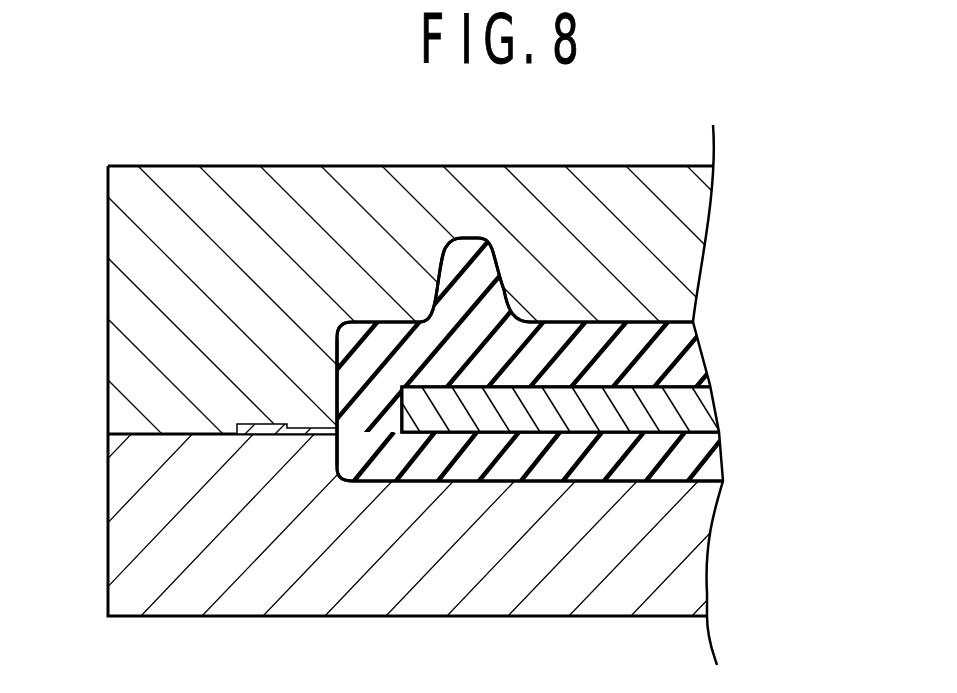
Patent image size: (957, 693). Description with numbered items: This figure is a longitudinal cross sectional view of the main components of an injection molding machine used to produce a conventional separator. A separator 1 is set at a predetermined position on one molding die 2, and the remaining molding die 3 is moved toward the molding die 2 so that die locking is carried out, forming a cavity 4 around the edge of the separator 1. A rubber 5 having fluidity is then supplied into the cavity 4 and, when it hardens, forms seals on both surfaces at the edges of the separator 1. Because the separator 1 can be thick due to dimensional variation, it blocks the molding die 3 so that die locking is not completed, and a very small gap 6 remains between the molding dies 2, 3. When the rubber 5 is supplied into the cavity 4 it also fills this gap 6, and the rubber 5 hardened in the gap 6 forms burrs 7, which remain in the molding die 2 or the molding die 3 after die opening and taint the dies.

The separator 1 is at (667, 408).
The molding die 2 is at (527, 565).
The molding die 3 is at (643, 243).
The cavity 4 is at (342, 383).
The rubber 5 is at (657, 353).
The gap 6 is at (264, 437).
The burrs 7 is at (292, 434).